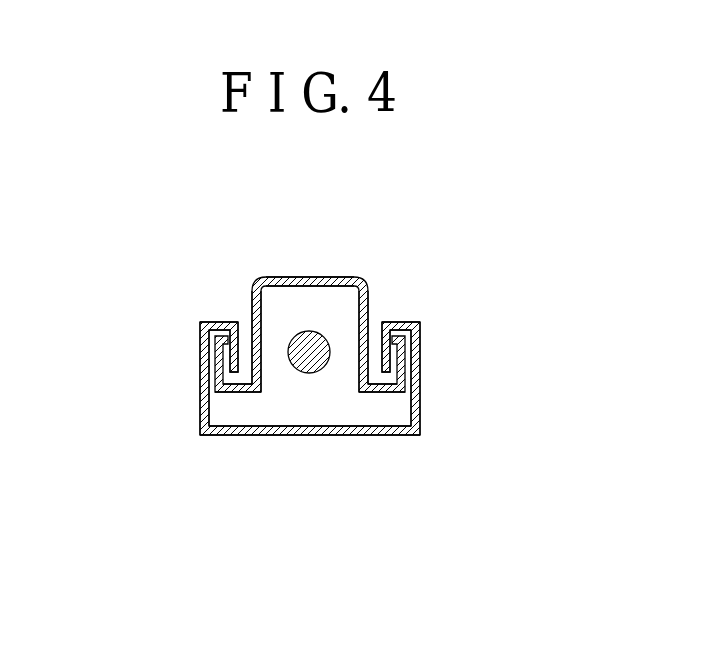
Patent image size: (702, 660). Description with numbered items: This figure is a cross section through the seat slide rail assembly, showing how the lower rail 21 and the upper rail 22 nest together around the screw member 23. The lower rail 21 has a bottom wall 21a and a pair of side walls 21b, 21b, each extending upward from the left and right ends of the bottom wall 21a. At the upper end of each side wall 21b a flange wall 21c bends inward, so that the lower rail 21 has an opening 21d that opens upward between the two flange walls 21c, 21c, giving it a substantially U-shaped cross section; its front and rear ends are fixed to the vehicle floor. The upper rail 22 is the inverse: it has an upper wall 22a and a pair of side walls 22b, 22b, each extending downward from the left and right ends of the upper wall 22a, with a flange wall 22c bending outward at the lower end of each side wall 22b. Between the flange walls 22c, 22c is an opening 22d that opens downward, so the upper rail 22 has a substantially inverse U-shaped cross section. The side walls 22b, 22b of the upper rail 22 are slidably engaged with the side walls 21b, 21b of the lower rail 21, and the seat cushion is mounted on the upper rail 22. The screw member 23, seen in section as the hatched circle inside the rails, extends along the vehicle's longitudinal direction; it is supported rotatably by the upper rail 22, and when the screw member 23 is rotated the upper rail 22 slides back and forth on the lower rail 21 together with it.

The lower rail 21 is at (190, 430).
The bottom wall 21a is at (312, 436).
The side wall 21b is at (208, 392).
The flange wall 21c is at (218, 322).
The opening 21d is at (373, 333).
The upper rail 22 is at (353, 278).
The upper wall 22a is at (302, 278).
The side wall 22b is at (250, 305).
The flange wall 22c is at (238, 394).
The opening 22d is at (279, 390).
The screw member 23 is at (317, 360).